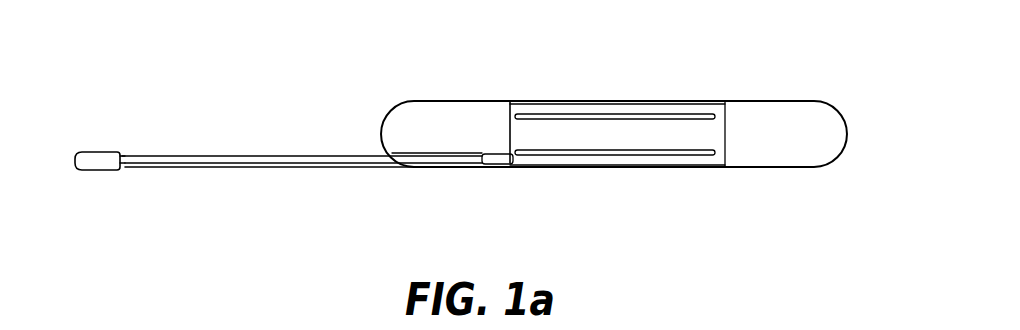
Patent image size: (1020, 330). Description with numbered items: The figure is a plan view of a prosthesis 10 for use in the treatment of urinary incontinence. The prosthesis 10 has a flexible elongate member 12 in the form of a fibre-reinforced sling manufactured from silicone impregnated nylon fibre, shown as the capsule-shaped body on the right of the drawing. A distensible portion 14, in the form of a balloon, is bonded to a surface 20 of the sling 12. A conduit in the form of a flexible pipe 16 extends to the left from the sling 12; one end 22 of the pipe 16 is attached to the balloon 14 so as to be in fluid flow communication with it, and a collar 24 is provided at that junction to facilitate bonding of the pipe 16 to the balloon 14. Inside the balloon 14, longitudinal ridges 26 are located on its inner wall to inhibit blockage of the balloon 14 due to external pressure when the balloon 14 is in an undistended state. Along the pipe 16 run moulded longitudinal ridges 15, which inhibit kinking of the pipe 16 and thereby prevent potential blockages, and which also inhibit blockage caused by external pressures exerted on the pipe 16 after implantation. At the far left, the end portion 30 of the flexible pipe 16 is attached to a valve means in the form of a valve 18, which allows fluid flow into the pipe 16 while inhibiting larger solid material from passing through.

The prosthesis 10 is at (450, 120).
The flexible elongate member 12 is at (430, 99).
The distensible portion 14 is at (508, 131).
The longitudinal ridges 15 is at (200, 166).
The flexible pipe 16 is at (236, 155).
The valve 18 is at (95, 164).
The surface 20 is at (562, 168).
The end of pipe 22 is at (472, 168).
The collar 24 is at (503, 165).
The longitudinal ridges 26 is at (638, 116).
The end portion 30 is at (124, 151).